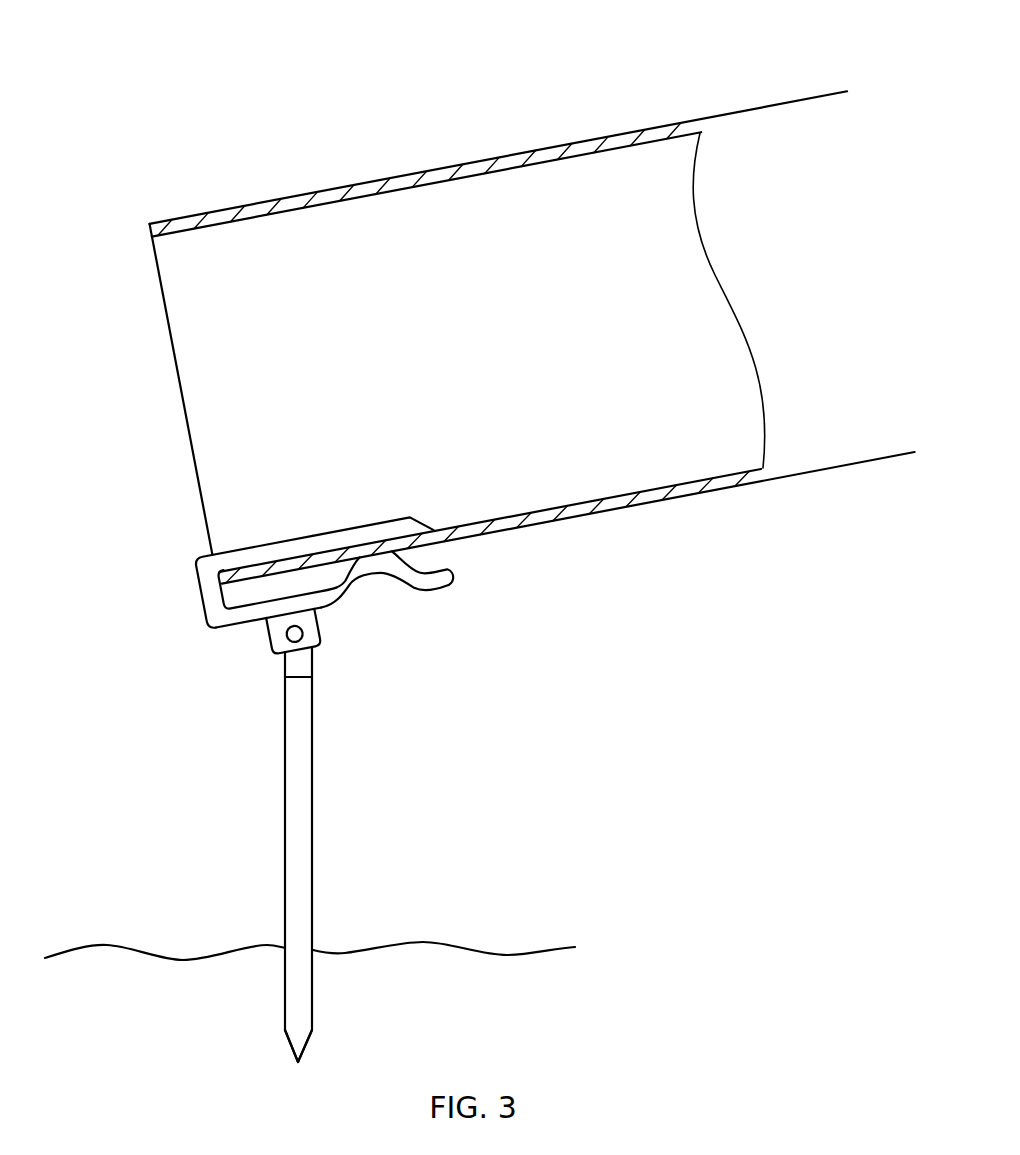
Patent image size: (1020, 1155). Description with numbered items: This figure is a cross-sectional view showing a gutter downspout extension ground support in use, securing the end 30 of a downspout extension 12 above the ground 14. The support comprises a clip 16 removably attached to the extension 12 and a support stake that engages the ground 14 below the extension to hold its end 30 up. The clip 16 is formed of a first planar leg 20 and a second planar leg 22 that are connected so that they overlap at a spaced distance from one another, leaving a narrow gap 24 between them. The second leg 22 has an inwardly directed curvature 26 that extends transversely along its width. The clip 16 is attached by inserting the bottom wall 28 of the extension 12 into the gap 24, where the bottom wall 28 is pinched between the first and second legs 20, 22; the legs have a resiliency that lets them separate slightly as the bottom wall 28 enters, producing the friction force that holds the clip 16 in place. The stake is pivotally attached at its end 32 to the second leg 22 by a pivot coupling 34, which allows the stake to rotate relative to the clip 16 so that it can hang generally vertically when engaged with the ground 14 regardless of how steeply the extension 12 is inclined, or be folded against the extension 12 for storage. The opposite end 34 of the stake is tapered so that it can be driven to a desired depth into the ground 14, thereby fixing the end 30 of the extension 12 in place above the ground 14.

The downspout extension 12 is at (533, 147).
The ground 14 is at (458, 945).
The clip 16 is at (193, 573).
The first planar leg 20 is at (337, 537).
The second planar leg 22 is at (230, 620).
The gap 24 is at (283, 577).
The inwardly directed curvature 26 is at (373, 573).
The bottom wall 28 is at (590, 515).
The end 30 is at (162, 300).
The end 32 is at (297, 702).
The pivot coupling 34 is at (289, 632).